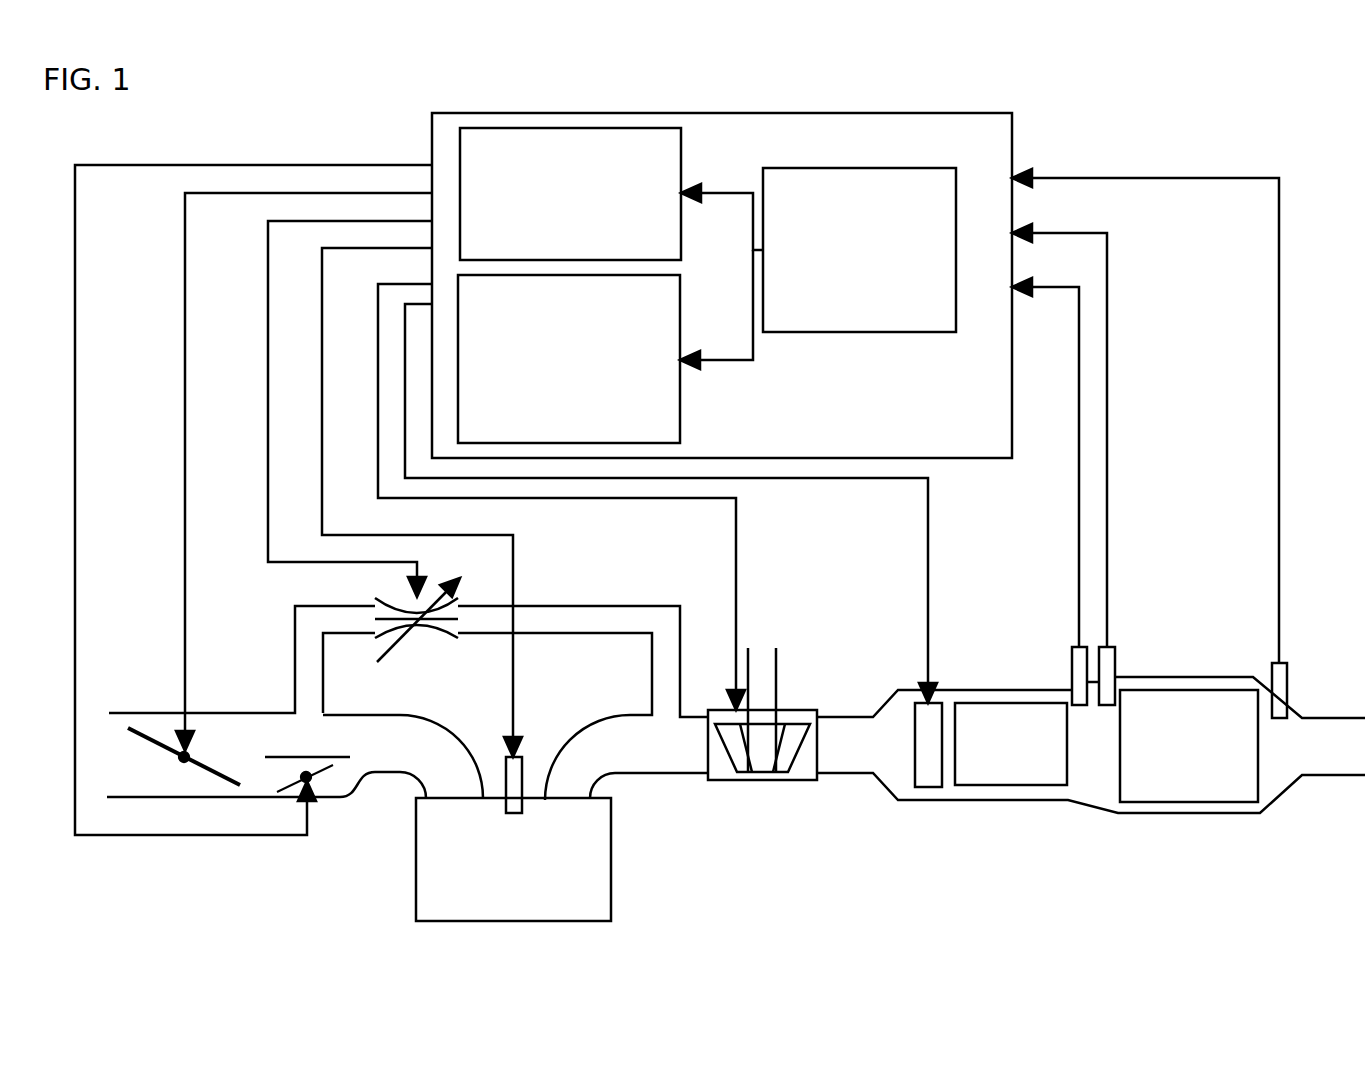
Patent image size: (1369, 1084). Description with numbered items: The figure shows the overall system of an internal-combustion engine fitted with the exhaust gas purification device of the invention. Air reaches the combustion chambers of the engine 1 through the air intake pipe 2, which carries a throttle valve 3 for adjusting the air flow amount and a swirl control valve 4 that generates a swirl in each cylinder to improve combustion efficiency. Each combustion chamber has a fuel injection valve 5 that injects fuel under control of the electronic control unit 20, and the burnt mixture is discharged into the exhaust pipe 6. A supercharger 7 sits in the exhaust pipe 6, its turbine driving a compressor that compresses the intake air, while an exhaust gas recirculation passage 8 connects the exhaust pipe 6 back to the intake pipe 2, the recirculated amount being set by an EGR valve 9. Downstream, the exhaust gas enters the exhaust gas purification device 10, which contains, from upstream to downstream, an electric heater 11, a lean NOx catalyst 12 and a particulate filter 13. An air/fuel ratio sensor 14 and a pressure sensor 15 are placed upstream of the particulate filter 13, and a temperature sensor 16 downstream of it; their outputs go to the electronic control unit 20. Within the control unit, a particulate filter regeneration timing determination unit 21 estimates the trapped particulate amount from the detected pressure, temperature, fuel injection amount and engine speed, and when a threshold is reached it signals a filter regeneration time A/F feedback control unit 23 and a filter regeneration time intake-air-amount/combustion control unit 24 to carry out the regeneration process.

The internal-combustion engine 1 is at (513, 923).
The air intake pipe 2 is at (212, 713).
The throttle valve 3 is at (212, 773).
The swirl control valve 4 is at (322, 770).
The fuel injection valve 5 is at (523, 752).
The exhaust pipe 6 is at (678, 773).
The supercharger 7 is at (792, 708).
The exhaust gas recirculation passage 8 is at (598, 606).
The EGR valve 9 is at (443, 585).
The exhaust gas purification device 10 is at (1120, 813).
The electric heater 11 is at (932, 787).
The lean NOx catalyst 12 is at (1032, 787).
The particulate filter 13 is at (1203, 803).
The air/fuel ratio sensor 14 is at (1072, 673).
The pressure sensor 15 is at (1115, 673).
The temperature sensor 16 is at (1287, 690).
The electronic control unit 20 is at (903, 112).
The particulate filter regeneration timing determination unit 21 is at (902, 333).
The filter regeneration time A/F feedback control unit 23 is at (682, 165).
The filter regeneration time intake-air-amount/combustion control unit 24 is at (681, 373).